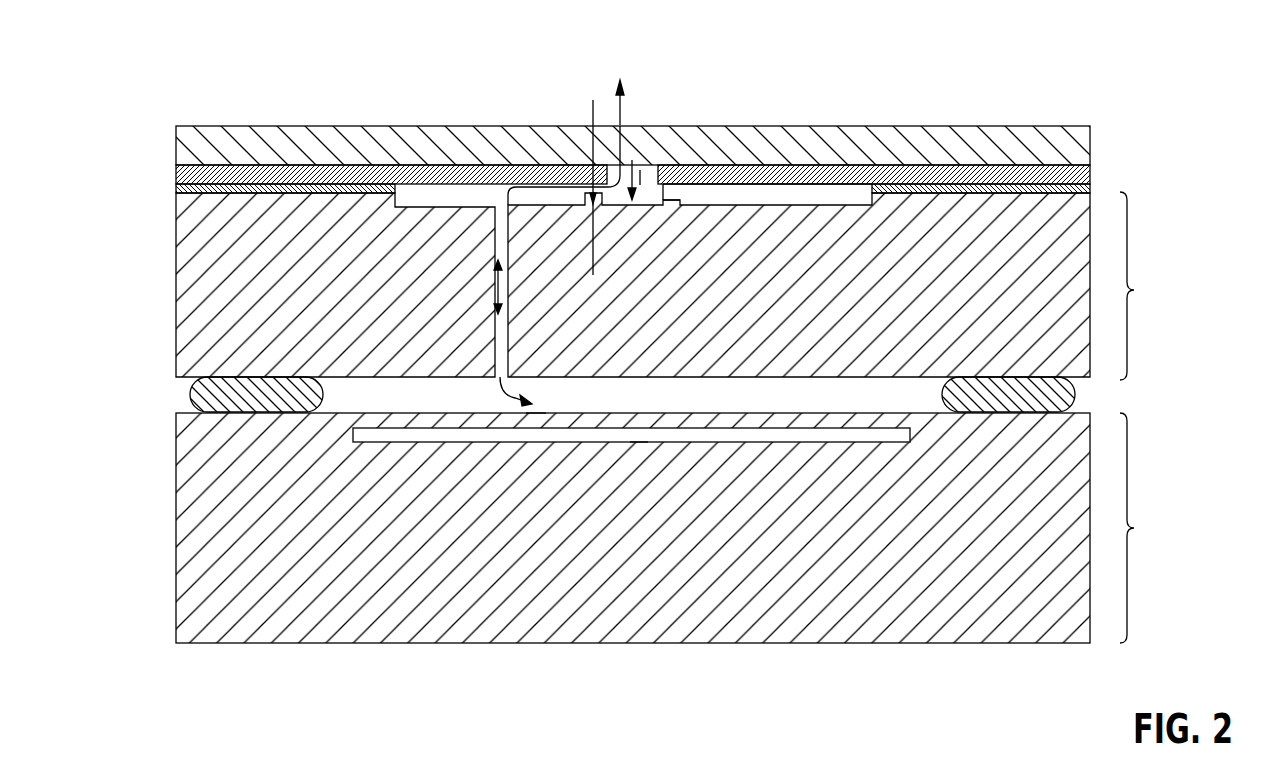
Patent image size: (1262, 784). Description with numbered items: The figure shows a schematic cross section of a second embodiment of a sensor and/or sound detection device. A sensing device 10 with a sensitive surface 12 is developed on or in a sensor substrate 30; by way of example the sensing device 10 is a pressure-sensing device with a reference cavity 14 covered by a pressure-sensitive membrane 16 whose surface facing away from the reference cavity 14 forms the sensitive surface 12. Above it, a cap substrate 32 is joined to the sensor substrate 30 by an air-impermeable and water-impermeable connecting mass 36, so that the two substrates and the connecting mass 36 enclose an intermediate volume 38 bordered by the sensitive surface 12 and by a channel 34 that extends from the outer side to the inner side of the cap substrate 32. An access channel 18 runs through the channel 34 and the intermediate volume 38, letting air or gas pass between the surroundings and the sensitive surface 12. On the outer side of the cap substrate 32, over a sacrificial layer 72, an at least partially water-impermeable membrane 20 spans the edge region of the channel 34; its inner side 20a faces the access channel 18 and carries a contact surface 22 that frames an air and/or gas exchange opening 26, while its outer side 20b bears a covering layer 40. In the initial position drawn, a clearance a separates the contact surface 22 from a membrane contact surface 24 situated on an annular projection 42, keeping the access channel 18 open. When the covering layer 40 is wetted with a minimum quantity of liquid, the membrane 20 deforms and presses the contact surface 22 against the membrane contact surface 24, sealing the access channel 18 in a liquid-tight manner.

The sensing device 10 is at (930, 432).
The sensitive surface 12 is at (752, 405).
The reference cavity 14 is at (638, 433).
The pressure-sensitive membrane 16 is at (535, 418).
The access channel 18 is at (615, 124).
The water-impermeable membrane 20 is at (1092, 178).
The inner side of the membrane 20a is at (820, 185).
The outer side of the membrane 20b is at (935, 165).
The contact surface 22 is at (641, 185).
The membrane contact surface 24 is at (750, 184).
The air and/or gas exchange opening 26 is at (632, 160).
The sensor substrate 30 is at (670, 528).
The cap substrate 32 is at (670, 286).
The channel 34 is at (492, 292).
The air-impermeable and water-impermeable connecting mass 36 is at (200, 395).
The intermediate volume 38 is at (648, 408).
The covering layer 40 is at (1003, 145).
The annular projection 42 is at (668, 188).
The sacrificial layer 72 is at (262, 188).
The clearance a is at (593, 100).